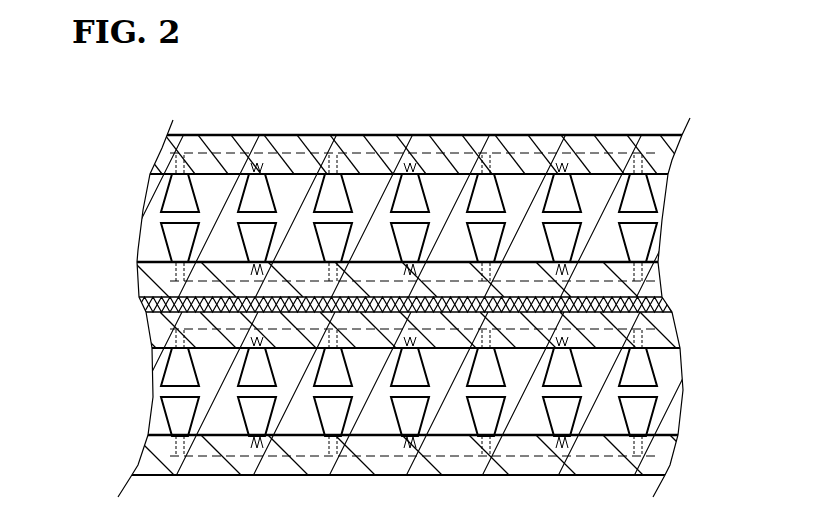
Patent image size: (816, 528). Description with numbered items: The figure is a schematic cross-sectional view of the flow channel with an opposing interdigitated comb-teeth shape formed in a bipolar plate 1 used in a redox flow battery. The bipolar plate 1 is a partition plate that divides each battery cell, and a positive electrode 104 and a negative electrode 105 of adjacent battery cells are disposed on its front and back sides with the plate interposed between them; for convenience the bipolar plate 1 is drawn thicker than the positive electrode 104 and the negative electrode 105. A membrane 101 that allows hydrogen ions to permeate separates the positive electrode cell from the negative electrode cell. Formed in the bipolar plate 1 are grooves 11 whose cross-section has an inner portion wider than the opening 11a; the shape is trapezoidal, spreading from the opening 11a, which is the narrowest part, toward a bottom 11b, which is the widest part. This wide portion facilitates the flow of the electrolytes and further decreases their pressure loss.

The bipolar plate 1 is at (652, 217).
The groove 11 is at (172, 238).
The opening 11a is at (192, 198).
The bottom 11b is at (160, 216).
The membrane 101 is at (665, 302).
The positive electrode 104 is at (660, 283).
The negative electrode 105 is at (660, 150).